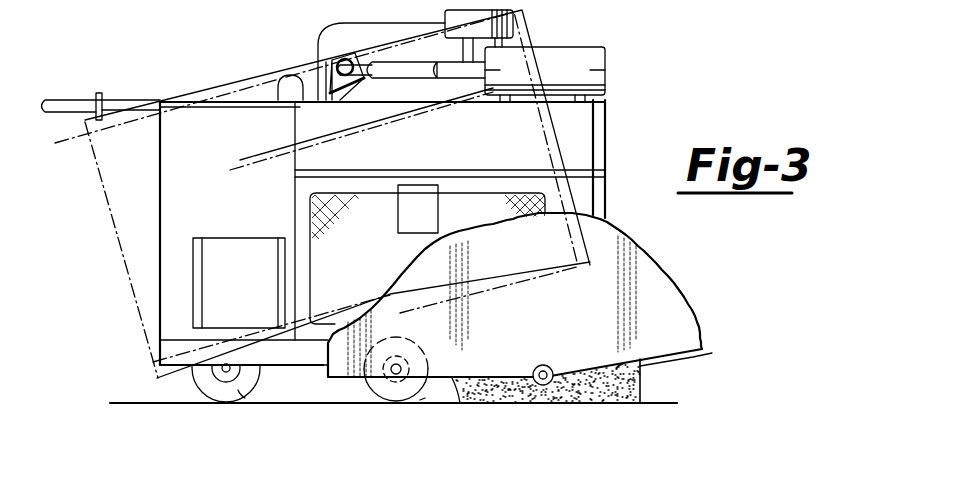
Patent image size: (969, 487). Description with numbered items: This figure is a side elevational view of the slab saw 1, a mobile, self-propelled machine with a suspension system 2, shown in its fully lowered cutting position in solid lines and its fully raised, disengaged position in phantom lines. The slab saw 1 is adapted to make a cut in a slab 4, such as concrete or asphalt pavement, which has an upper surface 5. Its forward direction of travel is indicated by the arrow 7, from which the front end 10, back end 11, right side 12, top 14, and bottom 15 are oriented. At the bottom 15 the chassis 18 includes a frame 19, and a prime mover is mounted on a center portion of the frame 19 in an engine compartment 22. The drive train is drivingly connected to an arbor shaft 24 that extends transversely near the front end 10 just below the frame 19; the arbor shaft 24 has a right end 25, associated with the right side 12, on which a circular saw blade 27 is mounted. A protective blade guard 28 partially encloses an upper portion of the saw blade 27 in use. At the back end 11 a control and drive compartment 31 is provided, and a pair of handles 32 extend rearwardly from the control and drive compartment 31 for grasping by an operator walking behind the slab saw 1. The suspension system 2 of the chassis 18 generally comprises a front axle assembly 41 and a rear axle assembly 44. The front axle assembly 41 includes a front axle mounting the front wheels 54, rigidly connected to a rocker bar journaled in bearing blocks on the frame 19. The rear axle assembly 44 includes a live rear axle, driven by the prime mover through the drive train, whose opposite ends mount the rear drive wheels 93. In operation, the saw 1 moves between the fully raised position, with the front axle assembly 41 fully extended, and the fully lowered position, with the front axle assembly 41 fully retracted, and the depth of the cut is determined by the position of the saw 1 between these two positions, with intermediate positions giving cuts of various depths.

The slab saw 1 is at (161, 74).
The suspension system 2 is at (359, 400).
The slab 4 is at (92, 320).
The upper surface 5 is at (668, 403).
The arrow 7 is at (788, 240).
The front end 10 is at (620, 92).
The back end 11 is at (158, 158).
The right side 12 is at (452, 164).
The top 14 is at (243, 85).
The bottom 15 is at (310, 368).
The chassis 18 is at (158, 306).
The frame 19 is at (160, 364).
The engine compartment 22 is at (483, 137).
The arbor shaft 24 is at (548, 368).
The right end of arbor shaft 25 is at (538, 365).
The circular saw blade 27 is at (595, 375).
The blade guard 28 is at (672, 277).
The control and drive compartment 31 is at (190, 191).
The handles 32 is at (44, 105).
The front axle assembly 41 is at (420, 400).
The rear axle assembly 44 is at (198, 395).
The front wheels 54 is at (395, 400).
The rear drive wheels 93 is at (243, 392).